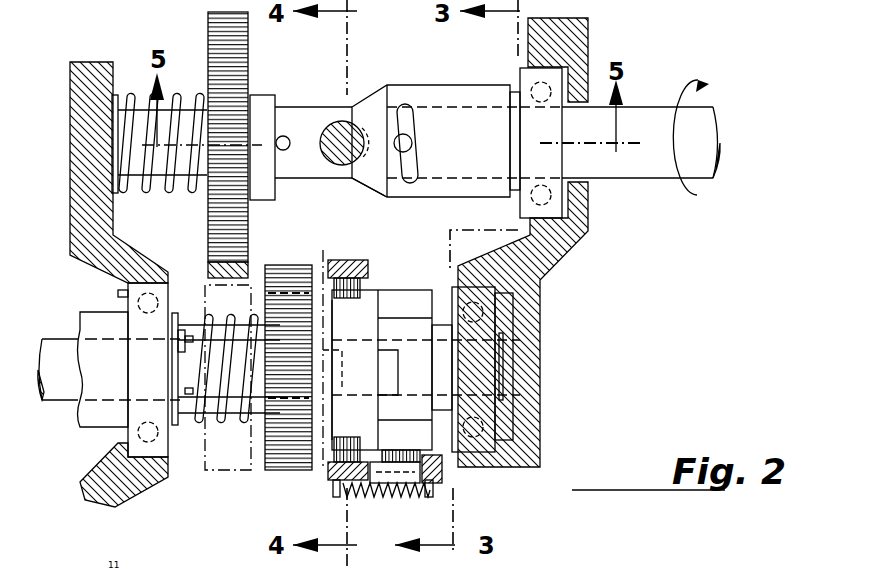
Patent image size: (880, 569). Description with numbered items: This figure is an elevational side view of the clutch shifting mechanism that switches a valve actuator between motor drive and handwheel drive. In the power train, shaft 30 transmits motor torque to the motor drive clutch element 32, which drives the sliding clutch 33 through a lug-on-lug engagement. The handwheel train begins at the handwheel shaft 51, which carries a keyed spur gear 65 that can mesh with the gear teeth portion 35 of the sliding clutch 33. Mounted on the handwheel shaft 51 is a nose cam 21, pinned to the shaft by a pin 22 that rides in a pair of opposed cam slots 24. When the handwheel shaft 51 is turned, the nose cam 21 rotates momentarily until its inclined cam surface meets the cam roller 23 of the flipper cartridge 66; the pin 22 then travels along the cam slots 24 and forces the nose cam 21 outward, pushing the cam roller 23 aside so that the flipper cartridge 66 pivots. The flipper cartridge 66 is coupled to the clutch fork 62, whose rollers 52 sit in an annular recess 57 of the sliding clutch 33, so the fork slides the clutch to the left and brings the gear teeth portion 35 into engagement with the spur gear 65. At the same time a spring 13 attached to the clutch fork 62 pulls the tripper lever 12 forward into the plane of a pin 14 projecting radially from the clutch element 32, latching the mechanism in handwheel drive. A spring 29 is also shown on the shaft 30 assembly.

The tripper lever 12 is at (450, 478).
The spring 13 is at (372, 495).
The pin 14 is at (396, 456).
The nose cam 21 is at (428, 92).
The pin 22 is at (403, 135).
The cam roller 23 is at (368, 186).
The cam slots 24 is at (412, 170).
The spring 29 is at (200, 410).
The shaft 30 is at (60, 356).
The clutch element 32 is at (428, 300).
The sliding clutch 33 is at (378, 375).
The gear teeth portion 35 is at (292, 277).
The handwheel shaft 51 is at (300, 118).
The rollers 52 is at (362, 292).
The annular recess 57 is at (375, 305).
The clutch fork 62 is at (350, 268).
The spur gear 65 is at (218, 45).
The flipper cartridge 66 is at (338, 162).